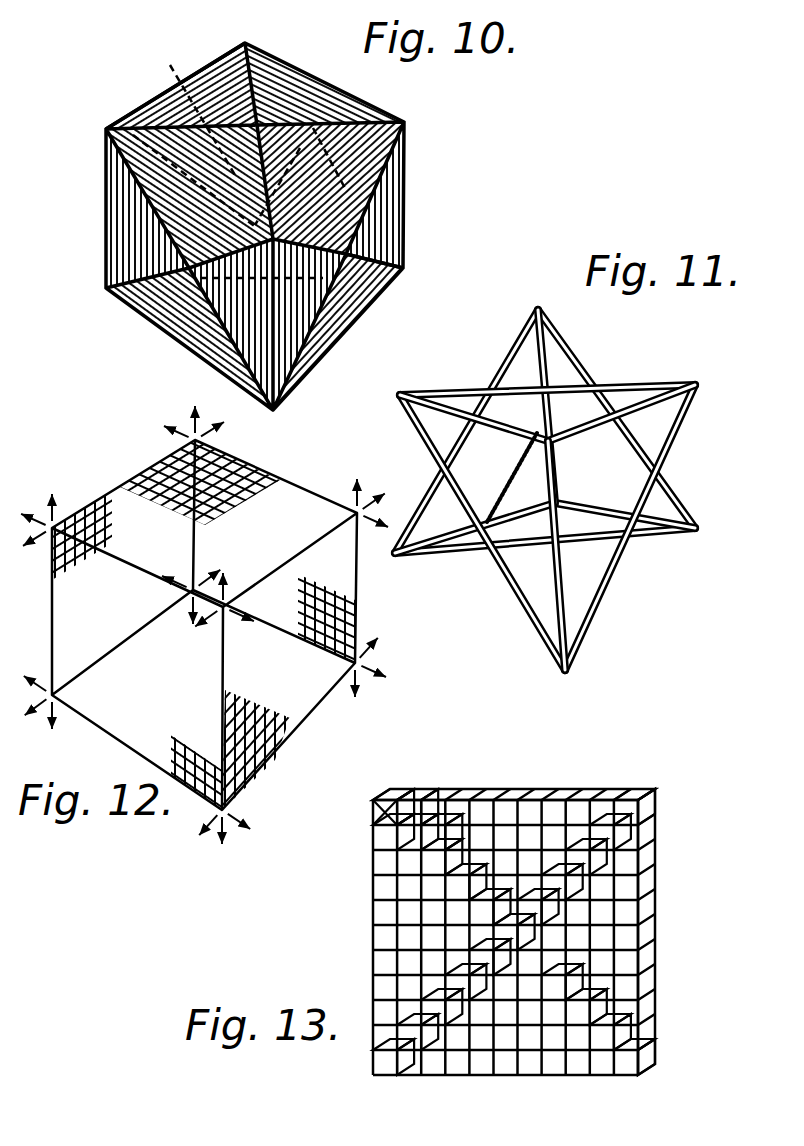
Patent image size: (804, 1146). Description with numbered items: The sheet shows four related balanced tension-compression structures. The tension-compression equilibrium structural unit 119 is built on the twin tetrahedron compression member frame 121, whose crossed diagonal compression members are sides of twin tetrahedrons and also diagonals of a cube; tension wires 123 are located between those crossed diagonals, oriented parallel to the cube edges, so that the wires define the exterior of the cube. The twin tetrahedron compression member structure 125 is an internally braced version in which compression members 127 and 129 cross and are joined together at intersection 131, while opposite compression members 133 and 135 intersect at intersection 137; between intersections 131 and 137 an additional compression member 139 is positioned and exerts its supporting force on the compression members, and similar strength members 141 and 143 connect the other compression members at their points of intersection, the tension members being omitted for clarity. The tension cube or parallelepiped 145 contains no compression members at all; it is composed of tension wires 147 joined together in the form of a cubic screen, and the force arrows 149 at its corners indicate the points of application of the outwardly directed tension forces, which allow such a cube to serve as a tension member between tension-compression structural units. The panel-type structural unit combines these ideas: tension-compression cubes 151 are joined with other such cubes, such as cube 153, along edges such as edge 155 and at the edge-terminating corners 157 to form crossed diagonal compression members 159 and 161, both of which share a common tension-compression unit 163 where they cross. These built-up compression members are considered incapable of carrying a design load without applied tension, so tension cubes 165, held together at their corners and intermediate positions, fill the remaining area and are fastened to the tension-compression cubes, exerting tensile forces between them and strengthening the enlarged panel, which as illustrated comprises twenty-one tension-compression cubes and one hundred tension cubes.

In FIG. 10, the tension-compression equilibrium structural unit 119 is at (410, 181).
In FIG. 10, the twin tetrahedron compression member frame 121 is at (170, 107).
In FIG. 10, the tension wires 123 is at (343, 301).
In FIG. 11, the twin tetrahedron compression member structure 125 is at (566, 324).
In FIG. 11, the compression member 127 is at (643, 380).
In FIG. 11, the compression member 129 is at (535, 362).
In FIG. 11, the intersection 131 is at (560, 378).
In FIG. 11, the compression member 133 is at (568, 636).
In FIG. 11, the compression member 135 is at (450, 556).
In FIG. 11, the intersection 137 is at (557, 547).
In FIG. 11, the additional compression member 139 is at (598, 546).
In FIG. 11, the strength member 141 is at (523, 488).
In FIG. 11, the strength member 143 is at (567, 488).
In FIG. 12, the tension cube or parallelepiped 145 is at (136, 462).
In FIG. 12, the tension wires 147 is at (273, 750).
In FIG. 12, the force arrows 149 is at (376, 670).
In FIG. 13, the tension-compression cubes 151 is at (402, 796).
In FIG. 13, the tension-compression cube 153 is at (422, 805).
In FIG. 13, the edge 155 is at (398, 845).
In FIG. 13, the edge-terminating corners 157 is at (402, 830).
In FIG. 13, the crossed diagonal compression member 159 is at (443, 887).
In FIG. 13, the crossed diagonal compression member 161 is at (600, 886).
In FIG. 13, the common tension-compression unit 163 is at (548, 935).
In FIG. 13, the tension cubes 165 is at (543, 790).